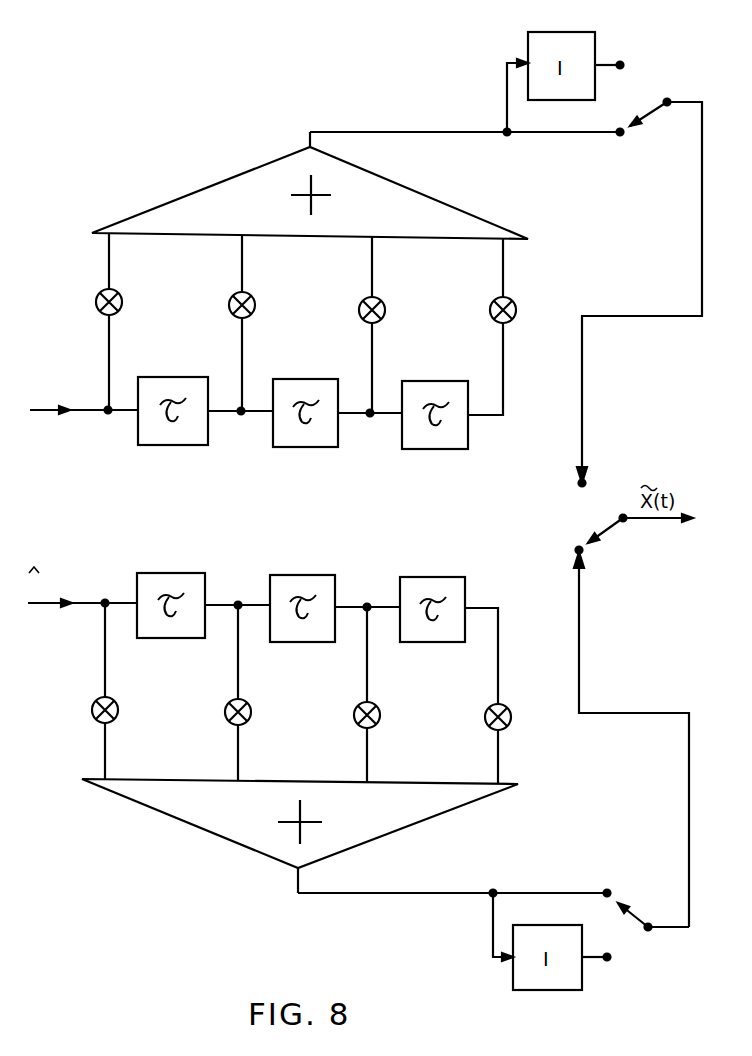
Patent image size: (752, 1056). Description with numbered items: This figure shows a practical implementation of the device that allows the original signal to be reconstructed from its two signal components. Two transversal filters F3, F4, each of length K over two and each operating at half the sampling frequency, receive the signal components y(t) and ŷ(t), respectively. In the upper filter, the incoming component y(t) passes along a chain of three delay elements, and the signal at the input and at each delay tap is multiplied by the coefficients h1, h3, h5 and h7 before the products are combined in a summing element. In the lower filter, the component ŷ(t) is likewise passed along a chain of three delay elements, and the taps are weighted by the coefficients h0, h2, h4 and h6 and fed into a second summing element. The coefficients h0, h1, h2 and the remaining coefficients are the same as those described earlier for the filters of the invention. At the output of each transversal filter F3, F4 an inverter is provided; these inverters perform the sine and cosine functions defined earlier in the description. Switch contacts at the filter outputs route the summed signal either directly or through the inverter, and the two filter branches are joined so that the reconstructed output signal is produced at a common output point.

The coefficient h0 is at (118, 691).
The coefficient h1 is at (122, 321).
The coefficient h2 is at (251, 692).
The coefficient h3 is at (255, 323).
The coefficient h4 is at (380, 694).
The coefficient h5 is at (385, 325).
The coefficient h6 is at (511, 744).
The coefficient h7 is at (516, 281).
The transversal filter F3 is at (286, 304).
The transversal filter F4 is at (280, 718).